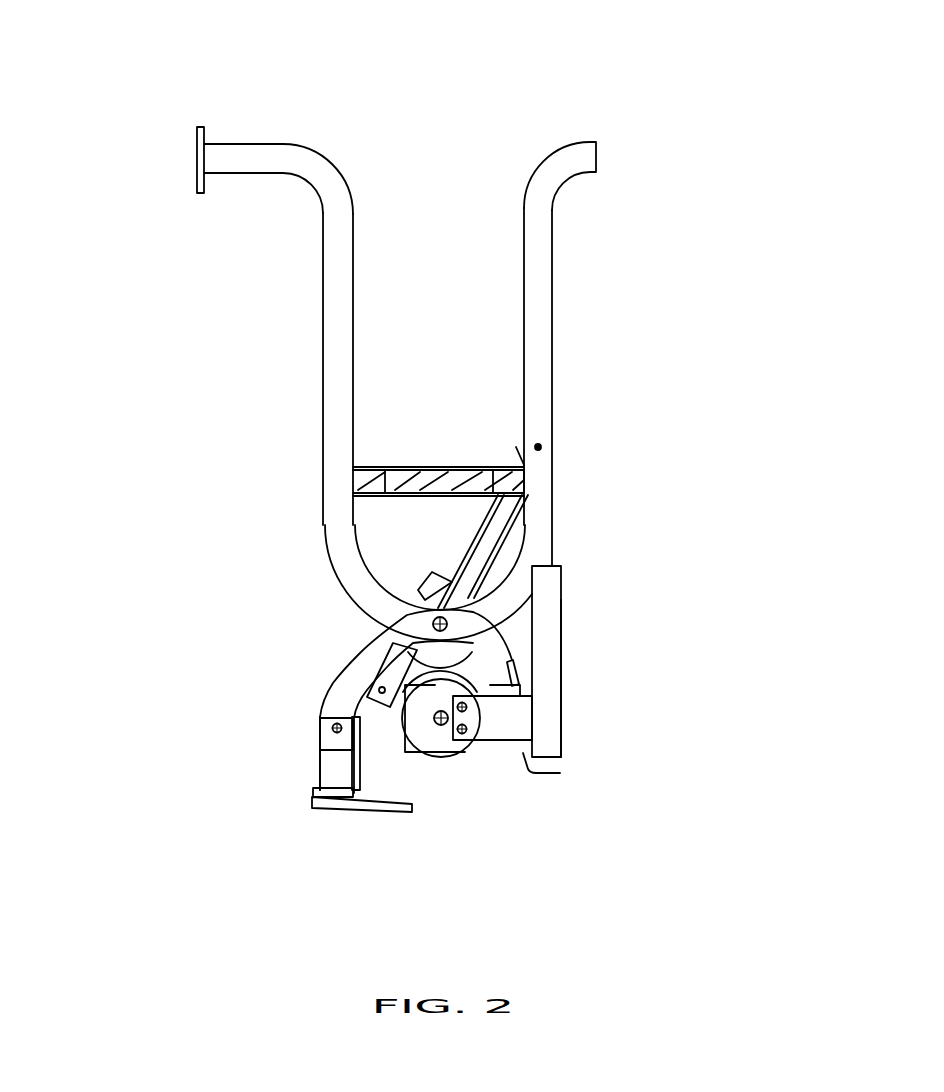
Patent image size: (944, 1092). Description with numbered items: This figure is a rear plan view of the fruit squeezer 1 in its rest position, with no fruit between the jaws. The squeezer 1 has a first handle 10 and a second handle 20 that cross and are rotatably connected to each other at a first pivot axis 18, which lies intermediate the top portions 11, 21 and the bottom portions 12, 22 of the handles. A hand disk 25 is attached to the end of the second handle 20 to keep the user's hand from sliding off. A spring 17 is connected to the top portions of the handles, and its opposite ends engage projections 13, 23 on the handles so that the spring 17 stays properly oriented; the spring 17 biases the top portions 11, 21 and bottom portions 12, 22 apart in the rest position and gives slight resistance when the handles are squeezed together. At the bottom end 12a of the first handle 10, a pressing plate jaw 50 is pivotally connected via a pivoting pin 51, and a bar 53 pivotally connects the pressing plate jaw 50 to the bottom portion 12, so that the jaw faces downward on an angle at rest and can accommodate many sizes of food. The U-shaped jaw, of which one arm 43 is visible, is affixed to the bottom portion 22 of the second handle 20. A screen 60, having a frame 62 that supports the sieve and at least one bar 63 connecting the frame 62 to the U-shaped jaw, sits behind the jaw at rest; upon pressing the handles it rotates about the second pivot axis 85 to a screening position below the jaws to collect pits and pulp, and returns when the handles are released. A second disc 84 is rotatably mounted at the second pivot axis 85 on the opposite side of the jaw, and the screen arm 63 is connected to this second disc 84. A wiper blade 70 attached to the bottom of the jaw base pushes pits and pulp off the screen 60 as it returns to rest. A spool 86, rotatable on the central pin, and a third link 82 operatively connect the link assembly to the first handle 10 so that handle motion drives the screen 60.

The squeezer 1 is at (637, 330).
The first handle 10 is at (562, 160).
The top portion 11 is at (553, 258).
The bottom portion 12 is at (330, 692).
The bottom end 12a is at (318, 712).
The projection 13 is at (503, 460).
The spring 17 is at (436, 470).
The first pivot axis 18 is at (435, 621).
The second handle 20 is at (268, 148).
The top portion 21 is at (343, 226).
The bottom portion 22 is at (527, 673).
The projection 23 is at (362, 472).
The hand disk 25 is at (200, 152).
The arm 43 is at (495, 753).
The pressing plate jaw 50 is at (338, 806).
The pivoting pin 51 is at (337, 731).
The bar 53 is at (325, 773).
The screen 60 is at (553, 598).
The frame 62 is at (562, 662).
The bar 63 is at (527, 720).
The wiper blade 70 is at (560, 773).
The third link 82 is at (466, 553).
The second disc 84 is at (433, 758).
The second pivot axis 85 is at (444, 724).
The spool 86 is at (420, 588).